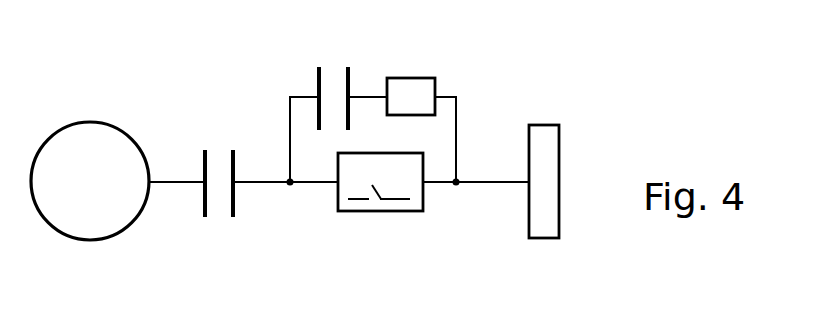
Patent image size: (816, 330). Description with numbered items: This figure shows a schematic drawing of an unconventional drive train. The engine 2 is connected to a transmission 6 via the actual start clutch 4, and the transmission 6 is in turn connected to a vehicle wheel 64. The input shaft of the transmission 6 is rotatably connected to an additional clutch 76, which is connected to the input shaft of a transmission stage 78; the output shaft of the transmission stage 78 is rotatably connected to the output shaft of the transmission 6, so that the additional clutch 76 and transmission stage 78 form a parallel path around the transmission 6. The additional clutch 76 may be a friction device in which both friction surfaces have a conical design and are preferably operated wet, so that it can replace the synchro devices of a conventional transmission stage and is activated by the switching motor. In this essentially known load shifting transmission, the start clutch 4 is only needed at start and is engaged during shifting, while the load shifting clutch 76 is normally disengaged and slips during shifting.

The engine 2 is at (108, 150).
The start clutch 4 is at (224, 160).
The transmission 6 is at (375, 212).
The vehicle wheel 64 is at (542, 150).
The additional clutch 76 is at (331, 82).
The transmission stage 78 is at (415, 78).